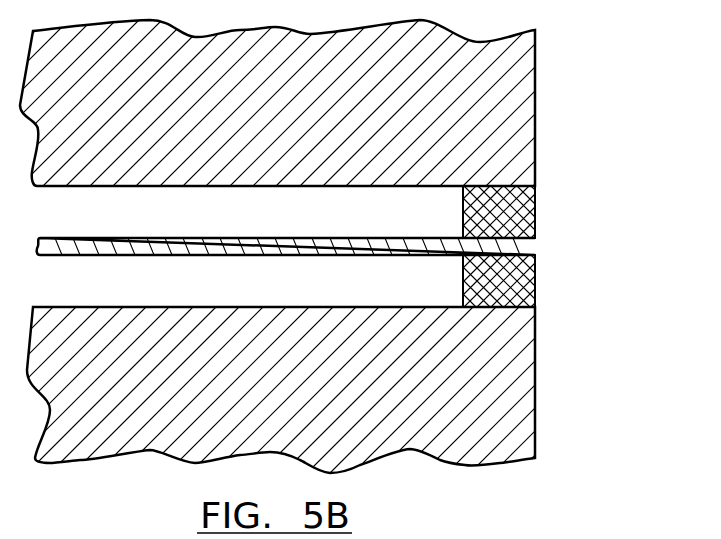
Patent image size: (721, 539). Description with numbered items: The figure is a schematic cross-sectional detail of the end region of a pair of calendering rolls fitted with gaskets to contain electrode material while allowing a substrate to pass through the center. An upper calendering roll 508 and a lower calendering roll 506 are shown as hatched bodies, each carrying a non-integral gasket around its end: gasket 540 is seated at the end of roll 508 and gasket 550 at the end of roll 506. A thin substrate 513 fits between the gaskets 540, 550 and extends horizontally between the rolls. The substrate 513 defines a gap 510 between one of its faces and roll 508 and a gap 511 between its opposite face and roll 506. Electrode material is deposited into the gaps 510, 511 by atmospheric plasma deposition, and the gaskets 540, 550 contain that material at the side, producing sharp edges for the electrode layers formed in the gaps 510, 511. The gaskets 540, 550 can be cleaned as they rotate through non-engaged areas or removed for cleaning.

The calendering roll 508 is at (515, 126).
The calendering roll 506 is at (517, 378).
The gasket 540 is at (513, 213).
The gasket 550 is at (505, 275).
The substrate 513 is at (513, 246).
The gap 510 is at (273, 226).
The gap 511 is at (273, 299).